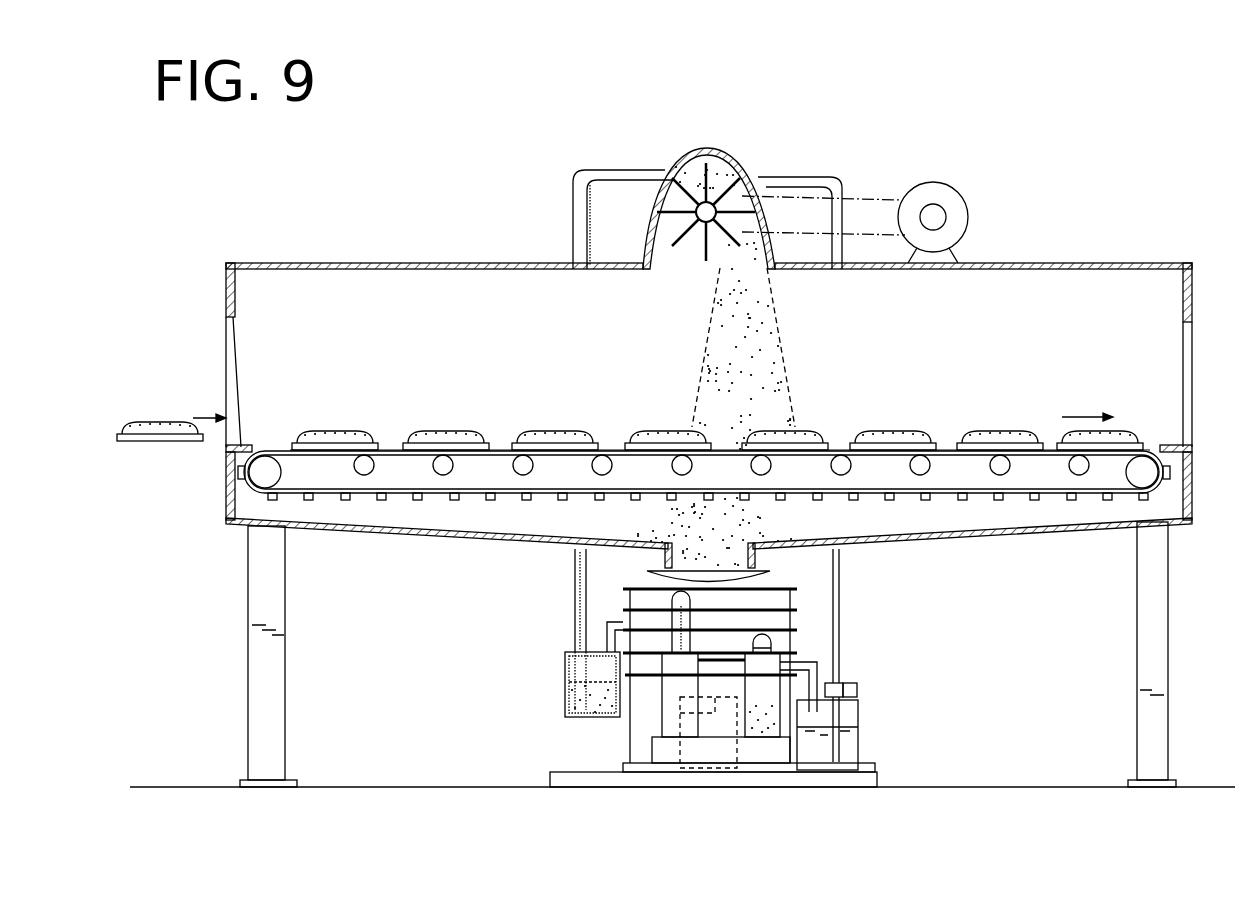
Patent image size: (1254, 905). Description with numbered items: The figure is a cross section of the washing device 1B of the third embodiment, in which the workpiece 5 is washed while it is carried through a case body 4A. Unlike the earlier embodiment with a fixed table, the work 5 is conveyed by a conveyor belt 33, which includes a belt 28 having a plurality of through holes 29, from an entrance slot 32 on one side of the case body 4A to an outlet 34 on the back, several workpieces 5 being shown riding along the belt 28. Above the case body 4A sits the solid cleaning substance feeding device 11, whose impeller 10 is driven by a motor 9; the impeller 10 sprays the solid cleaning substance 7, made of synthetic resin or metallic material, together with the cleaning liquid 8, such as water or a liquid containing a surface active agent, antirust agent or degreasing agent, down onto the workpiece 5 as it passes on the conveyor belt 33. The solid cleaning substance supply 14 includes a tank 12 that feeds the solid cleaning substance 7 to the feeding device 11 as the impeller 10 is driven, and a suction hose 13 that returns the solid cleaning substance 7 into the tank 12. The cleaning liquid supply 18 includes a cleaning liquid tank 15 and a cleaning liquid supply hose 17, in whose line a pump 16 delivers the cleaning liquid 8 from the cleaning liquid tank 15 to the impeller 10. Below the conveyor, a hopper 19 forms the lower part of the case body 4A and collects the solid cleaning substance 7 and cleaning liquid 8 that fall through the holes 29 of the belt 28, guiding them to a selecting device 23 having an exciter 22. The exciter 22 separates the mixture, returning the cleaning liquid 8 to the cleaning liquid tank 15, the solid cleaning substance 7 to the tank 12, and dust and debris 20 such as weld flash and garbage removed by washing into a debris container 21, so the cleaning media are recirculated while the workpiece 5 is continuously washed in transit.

The washing device 1B is at (1092, 203).
The case body 4A is at (411, 265).
The workpiece 5 is at (160, 425).
The solid cleaning substance 7 is at (713, 366).
The cleaning liquid 8 is at (786, 372).
The motor 9 is at (944, 205).
The impeller 10 is at (684, 193).
The solid cleaning substance feeding device 11 is at (735, 171).
The tank 12 is at (572, 702).
The suction hose 13 is at (574, 232).
The solid cleaning substance supply 14 is at (562, 672).
The cleaning liquid tank 15 is at (833, 762).
The pump 16 is at (857, 690).
The cleaning liquid supply hose 17 is at (832, 181).
The cleaning liquid supply 18 is at (866, 699).
The hopper 19 is at (920, 545).
The dust and debris 20 is at (768, 738).
The debris container 21 is at (745, 705).
The exciter 22 is at (682, 748).
The selecting device 23 is at (795, 603).
The belt 28 is at (425, 497).
The through holes 29 is at (392, 447).
The entrance slot 32 is at (228, 430).
The conveyor belt 33 is at (607, 447).
The outlet 34 is at (1190, 385).